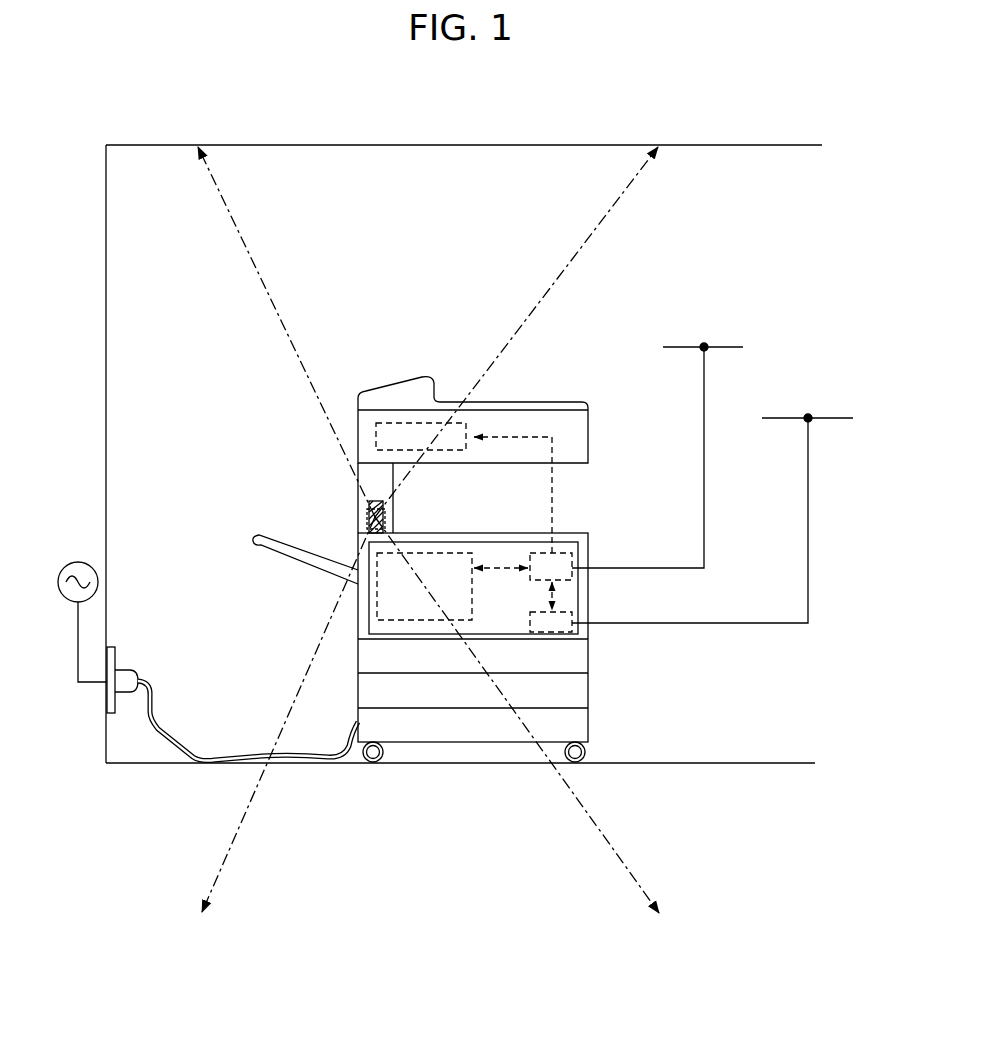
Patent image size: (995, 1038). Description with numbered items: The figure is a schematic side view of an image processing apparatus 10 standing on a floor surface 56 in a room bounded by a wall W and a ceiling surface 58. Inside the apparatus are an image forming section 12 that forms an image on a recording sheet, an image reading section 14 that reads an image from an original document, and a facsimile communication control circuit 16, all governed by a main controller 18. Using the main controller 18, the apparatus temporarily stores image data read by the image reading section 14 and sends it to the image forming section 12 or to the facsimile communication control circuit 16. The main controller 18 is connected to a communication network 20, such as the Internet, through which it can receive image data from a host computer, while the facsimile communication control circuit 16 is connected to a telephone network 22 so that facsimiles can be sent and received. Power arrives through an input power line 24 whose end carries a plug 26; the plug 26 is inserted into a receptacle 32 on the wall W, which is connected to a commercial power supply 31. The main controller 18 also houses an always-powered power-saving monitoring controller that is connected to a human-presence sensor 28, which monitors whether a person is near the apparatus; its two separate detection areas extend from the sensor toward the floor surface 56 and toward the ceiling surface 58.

The image processing apparatus 10 is at (364, 361).
The image forming section 12 is at (377, 606).
The image reading section 14 is at (376, 436).
The facsimile communication control circuit 16 is at (580, 614).
The main controller 18 is at (580, 556).
The communication network 20 is at (730, 346).
The telephone network 22 is at (842, 417).
The input power line 24 is at (168, 736).
The plug 26 is at (140, 672).
The human-presence sensor 28 is at (367, 513).
The commercial power supply 31 is at (67, 566).
The receptacle 32 is at (117, 655).
The floor surface 56 is at (684, 763).
The ceiling surface 58 is at (733, 147).
The wall W is at (106, 388).